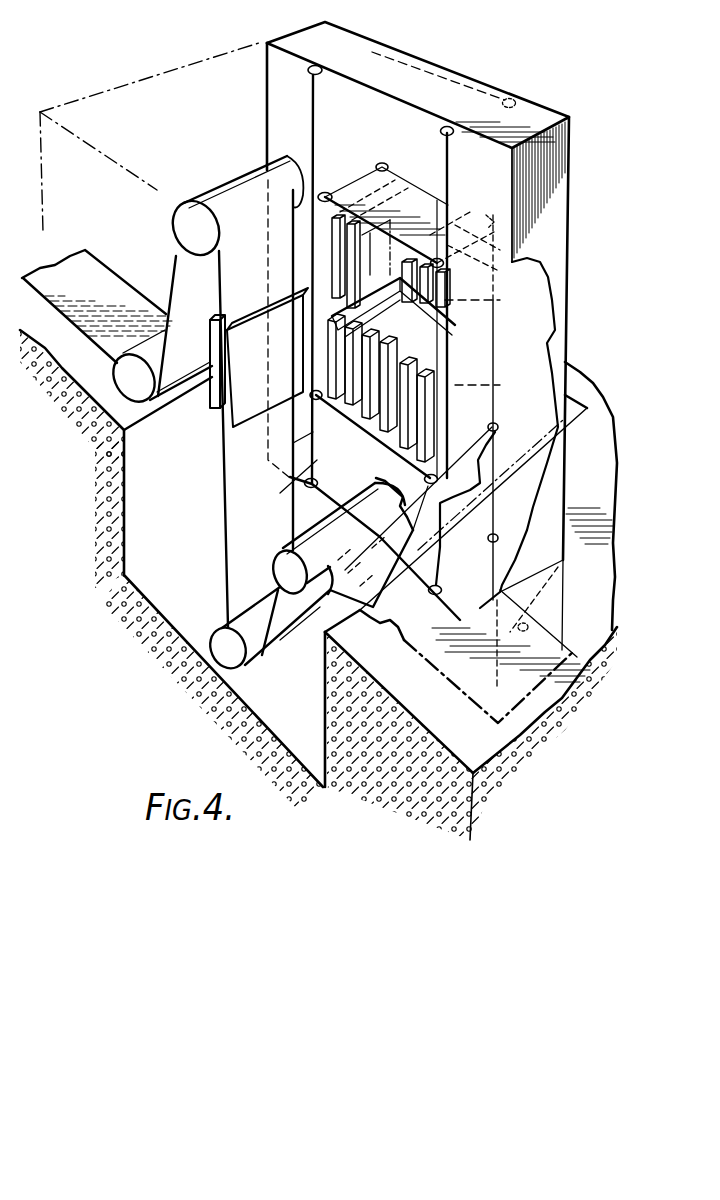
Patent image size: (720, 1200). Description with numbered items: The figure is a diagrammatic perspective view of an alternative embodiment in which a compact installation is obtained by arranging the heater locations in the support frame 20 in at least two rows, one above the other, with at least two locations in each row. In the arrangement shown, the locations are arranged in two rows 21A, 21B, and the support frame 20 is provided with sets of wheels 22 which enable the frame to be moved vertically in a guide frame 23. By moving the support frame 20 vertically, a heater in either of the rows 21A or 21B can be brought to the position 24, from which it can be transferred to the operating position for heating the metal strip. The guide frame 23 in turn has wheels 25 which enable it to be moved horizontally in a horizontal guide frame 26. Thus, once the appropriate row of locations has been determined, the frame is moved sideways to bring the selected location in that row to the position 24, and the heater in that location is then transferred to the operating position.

The support frame 20 is at (414, 193).
The upper row of locations 21A is at (462, 312).
The lower row of locations 21B is at (457, 405).
The sets of wheels 22 is at (325, 193).
The guide frame 23 is at (506, 217).
The transfer position 24 is at (372, 251).
The wheels 25 is at (314, 62).
The horizontal guide frame 26 is at (502, 120).